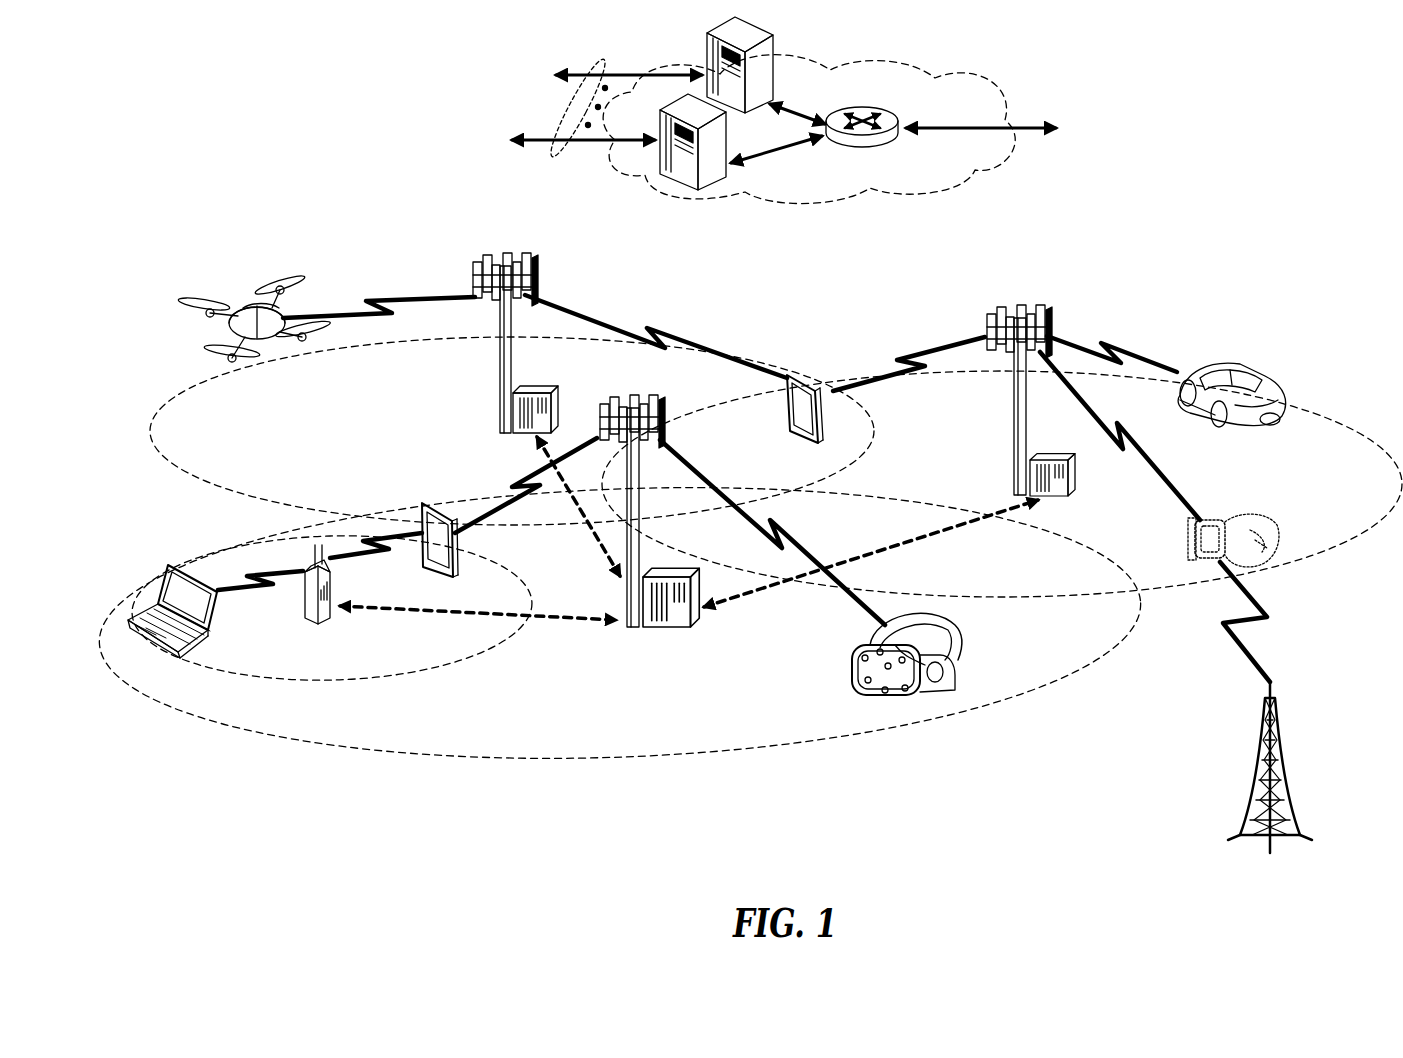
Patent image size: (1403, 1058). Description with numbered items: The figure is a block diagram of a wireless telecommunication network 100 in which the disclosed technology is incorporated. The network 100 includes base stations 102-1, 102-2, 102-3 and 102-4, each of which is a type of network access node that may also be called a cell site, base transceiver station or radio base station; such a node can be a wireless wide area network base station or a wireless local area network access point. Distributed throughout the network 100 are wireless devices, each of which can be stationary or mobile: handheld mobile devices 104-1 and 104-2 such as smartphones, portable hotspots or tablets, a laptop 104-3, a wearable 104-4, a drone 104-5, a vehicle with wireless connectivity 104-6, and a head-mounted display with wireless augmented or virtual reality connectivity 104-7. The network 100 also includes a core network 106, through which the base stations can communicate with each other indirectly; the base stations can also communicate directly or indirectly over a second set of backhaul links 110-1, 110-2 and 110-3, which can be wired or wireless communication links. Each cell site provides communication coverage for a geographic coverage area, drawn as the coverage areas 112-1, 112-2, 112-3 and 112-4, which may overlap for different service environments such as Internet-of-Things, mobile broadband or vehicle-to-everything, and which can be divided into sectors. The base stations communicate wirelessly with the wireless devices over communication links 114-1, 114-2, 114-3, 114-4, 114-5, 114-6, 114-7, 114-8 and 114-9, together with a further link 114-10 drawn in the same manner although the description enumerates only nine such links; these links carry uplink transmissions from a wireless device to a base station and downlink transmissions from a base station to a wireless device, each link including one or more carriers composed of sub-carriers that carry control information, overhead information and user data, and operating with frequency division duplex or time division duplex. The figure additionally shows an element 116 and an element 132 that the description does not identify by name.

The wireless telecommunication network 100 is at (1304, 122).
The base station 102-1 is at (631, 630).
The base station 102-2 is at (500, 398).
The base station 102-3 is at (1013, 418).
The base station 102-4 is at (305, 612).
The handheld mobile device 104-1 is at (455, 542).
The handheld mobile device 104-2 is at (786, 415).
The laptop 104-3 is at (152, 655).
The wearable 104-4 is at (1215, 517).
The drone 104-5 is at (286, 352).
The vehicle with wireless connectivity 104-6 is at (1253, 368).
The head-mounted display with wireless AR/VR connectivity 104-7 is at (962, 648).
The core network 106 is at (893, 193).
The backhaul link 110-1 is at (388, 610).
The backhaul link 110-2 is at (940, 545).
The backhaul link 110-3 is at (582, 540).
The geographic coverage area 112-1 is at (577, 757).
The geographic coverage area 112-2 is at (450, 677).
The geographic coverage area 112-3 is at (212, 491).
The geographic coverage area 112-4 is at (1308, 418).
The communication link 114-1 is at (790, 542).
The communication link 114-2 is at (510, 489).
The communication link 114-3 is at (255, 592).
The communication link 114-4 is at (388, 555).
The communication link 114-5 is at (380, 297).
The communication link 114-6 is at (672, 336).
The communication link 114-7 is at (905, 357).
The communication link 114-8 is at (1140, 448).
The communication link 114-9 is at (1118, 352).
The wireless link 114-10 is at (1250, 627).
The broadcast tower 116 is at (1292, 766).
The external network antenna 132 is at (576, 157).